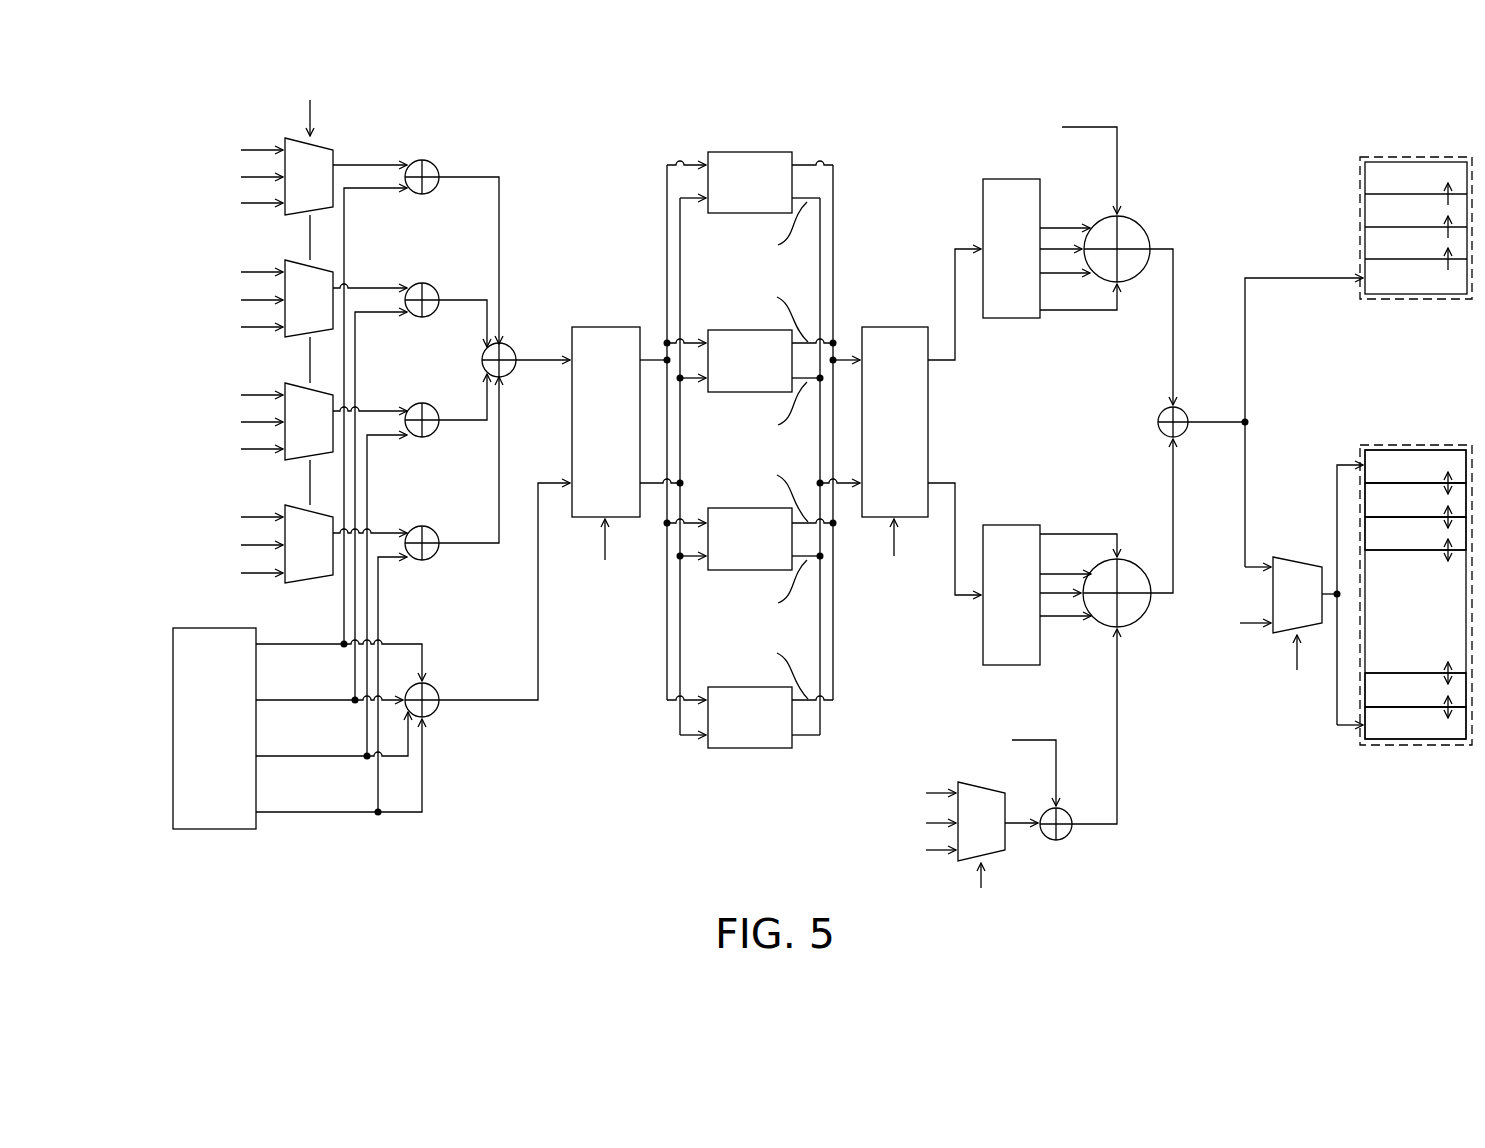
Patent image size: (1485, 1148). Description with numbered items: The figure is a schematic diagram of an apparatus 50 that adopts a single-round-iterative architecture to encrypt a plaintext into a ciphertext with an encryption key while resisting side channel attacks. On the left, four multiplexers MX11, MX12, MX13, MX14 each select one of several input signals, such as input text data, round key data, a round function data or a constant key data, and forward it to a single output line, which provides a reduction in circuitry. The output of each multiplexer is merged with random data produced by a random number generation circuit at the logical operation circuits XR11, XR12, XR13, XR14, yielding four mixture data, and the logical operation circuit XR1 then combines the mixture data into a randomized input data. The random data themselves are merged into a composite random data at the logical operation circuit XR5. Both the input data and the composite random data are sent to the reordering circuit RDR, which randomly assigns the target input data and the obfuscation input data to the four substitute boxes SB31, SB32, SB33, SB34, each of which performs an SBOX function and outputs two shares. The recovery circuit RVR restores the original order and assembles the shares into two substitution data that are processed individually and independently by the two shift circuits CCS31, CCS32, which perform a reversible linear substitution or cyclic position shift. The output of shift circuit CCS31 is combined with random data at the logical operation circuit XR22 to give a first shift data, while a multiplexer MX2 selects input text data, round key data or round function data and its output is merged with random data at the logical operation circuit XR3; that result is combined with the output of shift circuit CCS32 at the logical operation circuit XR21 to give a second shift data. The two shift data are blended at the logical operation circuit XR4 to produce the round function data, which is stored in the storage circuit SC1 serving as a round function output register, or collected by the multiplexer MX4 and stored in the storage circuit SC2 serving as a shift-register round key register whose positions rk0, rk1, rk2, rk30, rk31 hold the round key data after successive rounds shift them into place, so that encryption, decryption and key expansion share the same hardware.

The apparatus 50 is at (197, 88).
The multiplexer MX11 is at (292, 216).
The multiplexer MX12 is at (292, 338).
The multiplexer MX13 is at (292, 461).
The multiplexer MX14 is at (292, 584).
The logical operation circuit XR11 is at (422, 160).
The logical operation circuit XR12 is at (422, 283).
The logical operation circuit XR13 is at (422, 403).
The logical operation circuit XR14 is at (422, 526).
The logical operation circuit XR1 is at (514, 351).
The logical operation circuit XR5 is at (436, 687).
The reordering circuit RDR is at (605, 327).
The recovery circuit RVR is at (895, 327).
The substitute box SB31 is at (750, 182).
The substitute box SB32 is at (750, 361).
The substitute box SB33 is at (750, 539).
The substitute box SB34 is at (750, 717).
The shift circuit CCS31 is at (1015, 318).
The shift circuit CCS32 is at (1000, 525).
The logical operation circuit XR22 is at (1142, 226).
The logical operation circuit XR21 is at (1139, 627).
The logical operation circuit XR4 is at (1158, 422).
The logical operation circuit XR3 is at (1068, 836).
The multiplexer MX2 is at (1008, 852).
The multiplexer MX4 is at (1297, 557).
The storage circuit SC1 is at (1365, 157).
The storage circuit SC2 is at (1365, 445).
The round key register position rk0 is at (1378, 468).
The round key register position rk1 is at (1405, 500).
The round key register position rk2 is at (1428, 532).
The round key register position rk30 is at (1420, 700).
The round key register position rk31 is at (1378, 735).